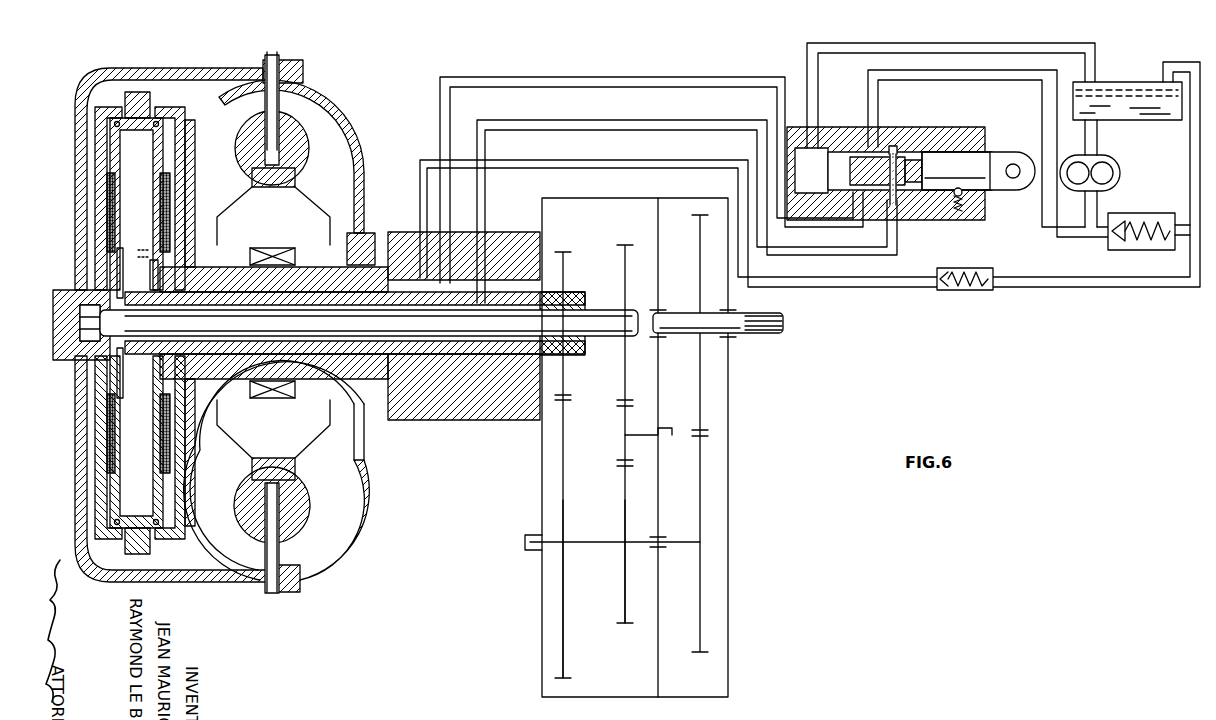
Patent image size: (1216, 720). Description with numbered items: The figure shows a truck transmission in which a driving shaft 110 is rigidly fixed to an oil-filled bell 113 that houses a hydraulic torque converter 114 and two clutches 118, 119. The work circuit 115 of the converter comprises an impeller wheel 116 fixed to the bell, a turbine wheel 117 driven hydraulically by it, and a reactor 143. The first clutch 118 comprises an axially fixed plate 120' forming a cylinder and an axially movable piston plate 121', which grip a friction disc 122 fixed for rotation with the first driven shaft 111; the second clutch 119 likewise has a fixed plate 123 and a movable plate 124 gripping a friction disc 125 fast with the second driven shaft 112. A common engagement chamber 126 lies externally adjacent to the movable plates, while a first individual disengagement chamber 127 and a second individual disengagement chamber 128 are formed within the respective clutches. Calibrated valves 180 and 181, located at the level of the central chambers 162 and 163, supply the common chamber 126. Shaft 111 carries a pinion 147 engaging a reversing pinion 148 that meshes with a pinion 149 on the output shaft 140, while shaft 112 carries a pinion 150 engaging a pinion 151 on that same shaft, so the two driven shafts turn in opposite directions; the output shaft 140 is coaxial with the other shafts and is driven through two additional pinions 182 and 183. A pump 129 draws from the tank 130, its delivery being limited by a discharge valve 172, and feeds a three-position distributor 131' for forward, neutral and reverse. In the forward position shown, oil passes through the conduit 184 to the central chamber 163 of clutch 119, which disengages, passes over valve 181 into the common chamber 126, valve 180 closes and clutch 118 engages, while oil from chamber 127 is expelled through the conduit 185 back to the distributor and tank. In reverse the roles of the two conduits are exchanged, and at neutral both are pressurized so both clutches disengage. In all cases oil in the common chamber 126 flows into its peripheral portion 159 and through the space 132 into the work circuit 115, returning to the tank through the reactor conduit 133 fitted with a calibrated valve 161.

The driving shaft 110 is at (64, 310).
The first driven shaft 111 is at (369, 322).
The second driven shaft 112 is at (420, 385).
The bell 113 is at (155, 68).
The hydraulic torque converter 114 is at (350, 118).
The work circuit 115 is at (345, 150).
The impeller wheel 116 is at (277, 471).
The turbine wheel 117 is at (272, 465).
The first clutch 118 is at (106, 194).
The second clutch 119 is at (160, 208).
The axially fixed plate 120' is at (110, 447).
The axially movable plate 121' is at (99, 455).
The friction disc 122 is at (108, 447).
The axially fixed plate 123 is at (185, 525).
The axially movable plate 124 is at (175, 545).
The friction disc 125 is at (170, 455).
The common engagement chamber 126 is at (135, 147).
The first individual disengagement chamber 127 is at (105, 160).
The second individual disengagement chamber 128 is at (187, 170).
The pump 129 is at (1120, 173).
The tank 130 is at (1135, 98).
The distributor 131' is at (947, 140).
The space between impeller and turbine 132 is at (270, 62).
The reactor conduit 133 is at (890, 287).
The output shaft 140 is at (762, 335).
The reactor 143 is at (273, 496).
The pinion 147 is at (627, 252).
The reversing pinion 148 is at (626, 430).
The pinion 149 is at (626, 520).
The pinion 150 is at (567, 270).
The pinion 151 is at (565, 502).
The peripheral portion 159 is at (212, 76).
The calibrated valve 161 is at (968, 290).
The central chamber 162 is at (115, 370).
The central chamber 163 is at (155, 341).
The discharge valve 172 is at (1150, 214).
The calibrated valve 180 is at (115, 258).
The calibrated valve 181 is at (155, 260).
The additional pinion 182 is at (728, 506).
The additional pinion 183 is at (702, 392).
The conduit 184 is at (538, 78).
The conduit 185 is at (567, 120).